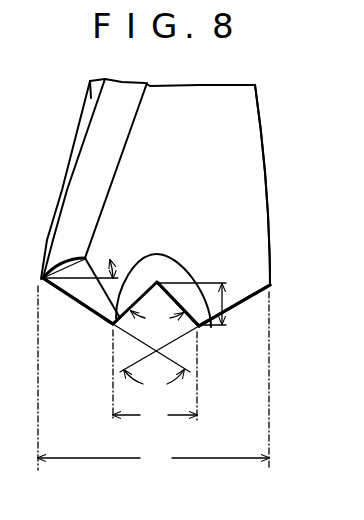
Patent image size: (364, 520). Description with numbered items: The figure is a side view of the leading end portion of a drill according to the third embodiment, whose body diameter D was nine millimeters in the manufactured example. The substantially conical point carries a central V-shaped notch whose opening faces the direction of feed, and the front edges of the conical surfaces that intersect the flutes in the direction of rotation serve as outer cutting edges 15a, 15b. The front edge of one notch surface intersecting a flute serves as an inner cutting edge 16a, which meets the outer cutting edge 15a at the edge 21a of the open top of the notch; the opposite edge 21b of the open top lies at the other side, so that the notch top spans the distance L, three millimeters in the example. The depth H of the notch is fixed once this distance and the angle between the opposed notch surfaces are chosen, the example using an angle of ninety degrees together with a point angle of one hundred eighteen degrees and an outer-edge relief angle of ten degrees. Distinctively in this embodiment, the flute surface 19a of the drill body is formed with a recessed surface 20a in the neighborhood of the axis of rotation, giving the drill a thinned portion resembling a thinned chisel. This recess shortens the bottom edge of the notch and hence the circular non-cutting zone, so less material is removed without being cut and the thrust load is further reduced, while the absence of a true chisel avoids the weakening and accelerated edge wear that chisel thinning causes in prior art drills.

The outer cutting edge 15a is at (245, 303).
The outer cutting edge 15b is at (68, 298).
The inner cutting edge 16a is at (187, 317).
The flute surface 19a is at (230, 290).
The recessed surface 20a is at (178, 288).
The edge of open top of V-shaped notch 21a is at (201, 328).
The edge of open top of V-shaped notch 21b is at (113, 327).
The depth of V-shaped notch H is at (221, 282).
The distance between opposed edges of open top of V-shaped notch L is at (155, 379).
The body diameter D is at (153, 379).